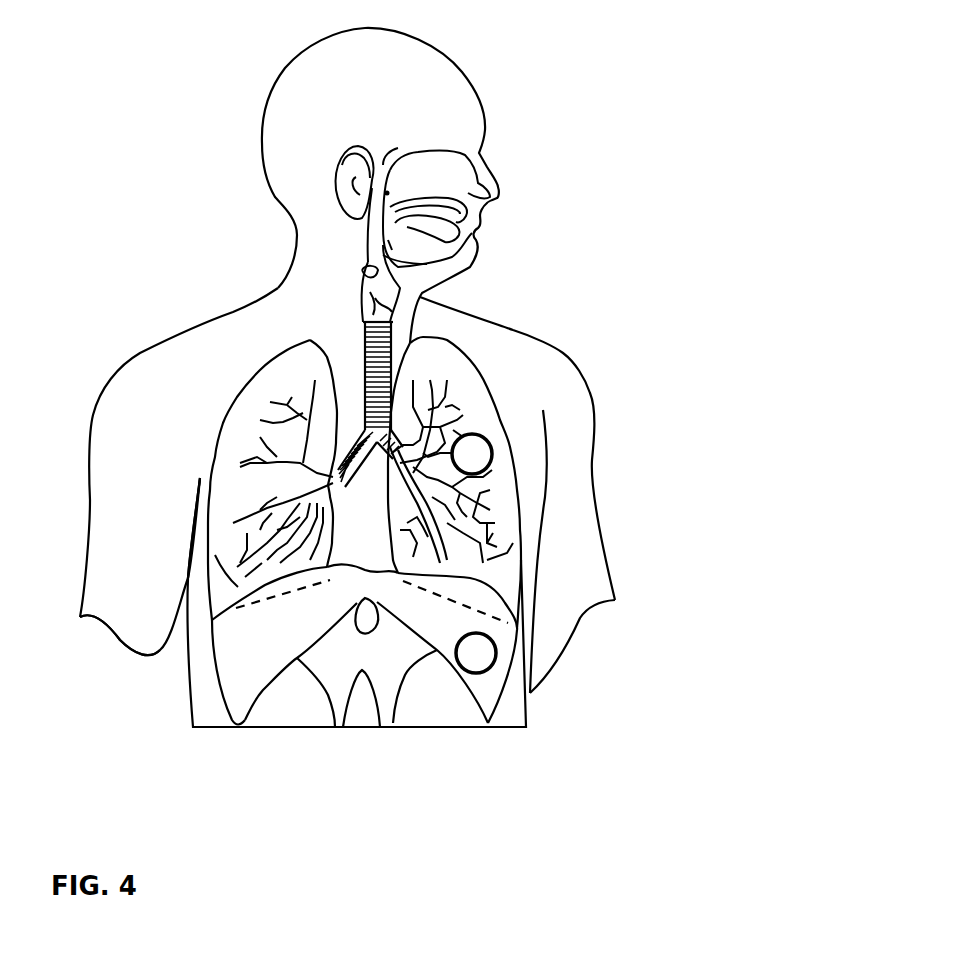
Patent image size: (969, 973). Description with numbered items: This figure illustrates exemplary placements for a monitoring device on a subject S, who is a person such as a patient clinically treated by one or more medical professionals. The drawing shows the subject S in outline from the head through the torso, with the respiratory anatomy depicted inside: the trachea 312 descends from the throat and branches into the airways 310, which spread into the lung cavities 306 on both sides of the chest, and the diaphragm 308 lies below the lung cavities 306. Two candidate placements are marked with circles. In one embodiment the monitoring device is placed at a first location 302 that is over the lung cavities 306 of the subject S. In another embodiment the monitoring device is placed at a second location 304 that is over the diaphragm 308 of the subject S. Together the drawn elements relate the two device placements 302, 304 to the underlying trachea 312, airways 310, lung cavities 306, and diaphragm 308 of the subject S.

The subject S is at (148, 203).
The first location 302 is at (492, 447).
The second location 304 is at (493, 639).
The lung cavities 306 is at (257, 403).
The diaphragm 308 is at (120, 649).
The airways 310 is at (245, 489).
The trachea 312 is at (390, 337).